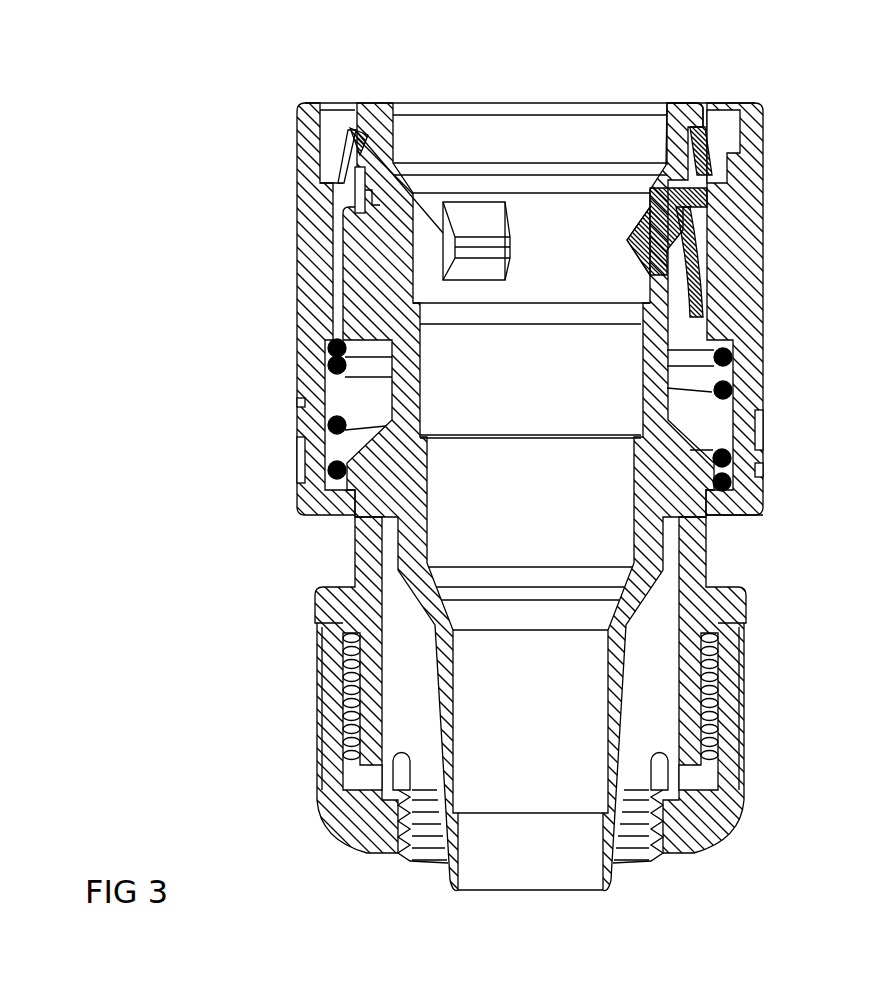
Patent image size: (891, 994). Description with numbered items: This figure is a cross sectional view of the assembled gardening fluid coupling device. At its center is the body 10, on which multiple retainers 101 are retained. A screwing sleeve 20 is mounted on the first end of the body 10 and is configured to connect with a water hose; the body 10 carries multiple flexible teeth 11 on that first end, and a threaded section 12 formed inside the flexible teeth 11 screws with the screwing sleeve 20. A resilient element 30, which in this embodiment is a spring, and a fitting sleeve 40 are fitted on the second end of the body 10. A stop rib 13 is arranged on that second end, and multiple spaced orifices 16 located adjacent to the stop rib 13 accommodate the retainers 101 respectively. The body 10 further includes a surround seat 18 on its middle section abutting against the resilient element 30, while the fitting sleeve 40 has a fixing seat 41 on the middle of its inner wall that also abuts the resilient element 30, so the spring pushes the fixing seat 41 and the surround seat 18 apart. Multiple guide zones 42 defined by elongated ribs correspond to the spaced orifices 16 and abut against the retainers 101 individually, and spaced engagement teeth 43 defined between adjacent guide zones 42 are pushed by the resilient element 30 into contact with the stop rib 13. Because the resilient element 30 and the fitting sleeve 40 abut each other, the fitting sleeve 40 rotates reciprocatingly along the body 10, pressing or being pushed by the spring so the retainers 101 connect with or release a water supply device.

The body 10 is at (418, 863).
The flexible teeth 11 is at (640, 863).
The threaded section 12 is at (720, 700).
The stop rib 13 is at (688, 103).
The spaced orifices 16 is at (352, 130).
The surround seat 18 is at (723, 513).
The screwing sleeve 20 is at (747, 798).
The resilient element 30 is at (714, 404).
The fitting sleeve 40 is at (290, 297).
The fixing seat 41 is at (733, 337).
The guide zones 42 is at (710, 227).
The spaced engagement teeth 43 is at (710, 143).
The retainers 101 is at (633, 227).